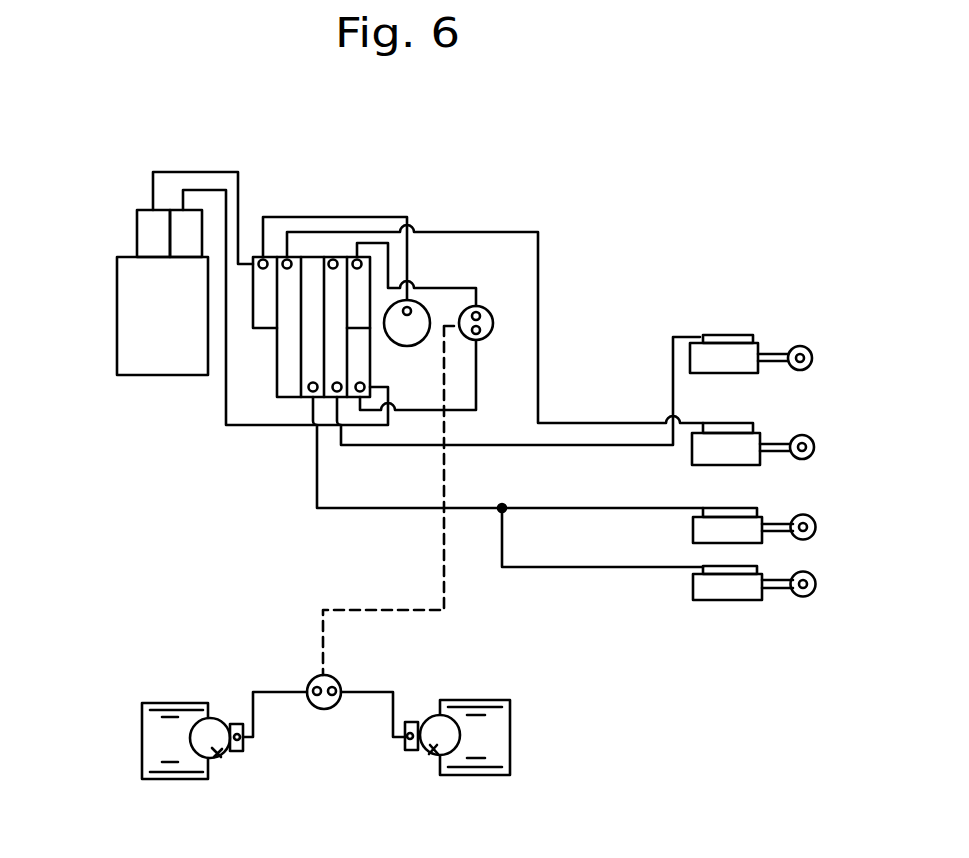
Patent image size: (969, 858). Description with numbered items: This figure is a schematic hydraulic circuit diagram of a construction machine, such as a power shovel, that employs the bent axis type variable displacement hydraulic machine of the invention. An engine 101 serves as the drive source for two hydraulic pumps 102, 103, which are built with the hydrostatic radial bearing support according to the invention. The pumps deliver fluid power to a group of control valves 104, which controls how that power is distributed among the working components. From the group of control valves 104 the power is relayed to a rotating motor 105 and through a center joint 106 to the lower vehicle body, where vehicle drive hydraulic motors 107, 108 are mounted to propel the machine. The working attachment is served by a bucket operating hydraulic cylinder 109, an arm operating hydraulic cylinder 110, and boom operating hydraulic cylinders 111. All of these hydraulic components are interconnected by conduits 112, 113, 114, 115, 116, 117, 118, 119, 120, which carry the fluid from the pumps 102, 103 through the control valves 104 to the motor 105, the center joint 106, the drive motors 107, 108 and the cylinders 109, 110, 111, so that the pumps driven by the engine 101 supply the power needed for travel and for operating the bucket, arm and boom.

The engine 101 is at (130, 302).
The hydraulic pump 102 is at (152, 225).
The hydraulic pump 103 is at (187, 237).
The group of control valves 104 is at (277, 377).
The rotating motor 105 is at (423, 315).
The center joint 106 is at (493, 317).
The vehicle drive hydraulic motor 107 is at (218, 757).
The vehicle drive hydraulic motor 108 is at (430, 742).
The bucket operating hydraulic cylinder 109 is at (730, 345).
The arm operating hydraulic cylinder 110 is at (735, 422).
The boom operating hydraulic cylinders 111 is at (733, 517).
The conduit 112 is at (203, 190).
The conduit 113 is at (168, 170).
The conduit 114 is at (347, 218).
The conduit 115 is at (507, 230).
The conduit 116 is at (468, 288).
The conduit 117 is at (480, 368).
The conduit 118 is at (537, 447).
The conduit 119 is at (563, 510).
The conduit 120 is at (605, 568).